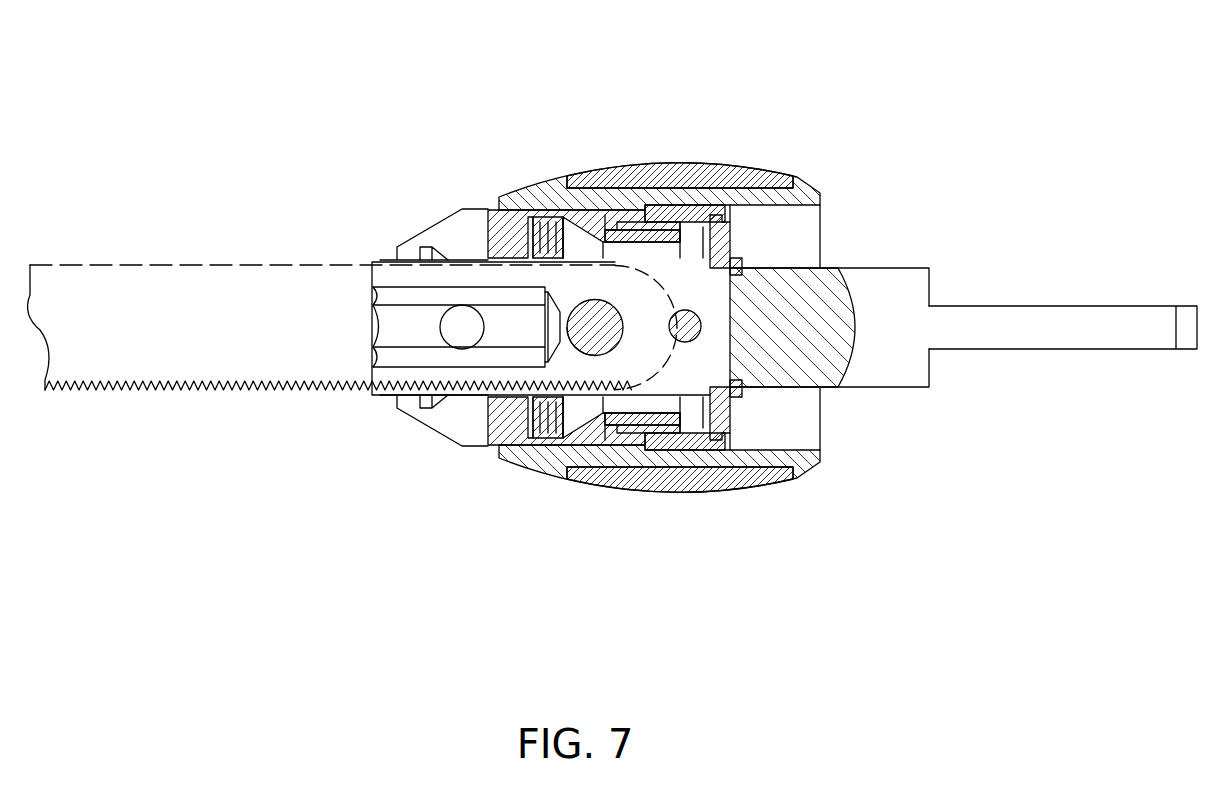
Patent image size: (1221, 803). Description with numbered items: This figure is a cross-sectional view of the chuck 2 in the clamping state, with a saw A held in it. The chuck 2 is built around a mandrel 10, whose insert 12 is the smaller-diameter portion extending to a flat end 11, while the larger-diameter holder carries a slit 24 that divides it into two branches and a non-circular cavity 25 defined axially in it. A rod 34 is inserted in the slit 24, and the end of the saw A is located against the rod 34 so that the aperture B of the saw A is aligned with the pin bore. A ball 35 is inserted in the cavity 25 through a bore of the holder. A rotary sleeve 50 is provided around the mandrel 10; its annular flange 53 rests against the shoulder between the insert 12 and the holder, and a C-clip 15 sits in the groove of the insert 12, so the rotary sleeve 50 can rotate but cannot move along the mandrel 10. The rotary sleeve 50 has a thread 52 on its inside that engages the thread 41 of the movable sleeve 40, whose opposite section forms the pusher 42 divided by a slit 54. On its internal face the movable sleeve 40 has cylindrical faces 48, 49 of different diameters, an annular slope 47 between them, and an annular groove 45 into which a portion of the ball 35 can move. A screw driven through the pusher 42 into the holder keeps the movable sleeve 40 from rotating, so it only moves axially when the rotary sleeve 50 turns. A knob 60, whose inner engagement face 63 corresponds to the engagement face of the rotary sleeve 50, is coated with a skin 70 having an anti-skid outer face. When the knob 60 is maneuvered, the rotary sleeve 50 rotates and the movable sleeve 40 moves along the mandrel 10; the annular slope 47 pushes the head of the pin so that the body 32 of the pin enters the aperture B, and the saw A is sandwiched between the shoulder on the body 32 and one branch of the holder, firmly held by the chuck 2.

The chuck 2 is at (494, 294).
The mandrel 10 is at (963, 335).
The flat end 11 is at (1003, 340).
The insert 12 is at (883, 372).
The C-clip 15 is at (745, 268).
The slit 24 is at (692, 228).
The cavity 25 is at (373, 355).
The body 32 is at (635, 415).
The rod 34 is at (716, 440).
The ball 35 is at (460, 320).
The movable sleeve 40 is at (584, 251).
The thread 41 is at (623, 232).
The pusher 42 is at (578, 218).
The annular groove 45 is at (440, 255).
The annular slope 47 is at (607, 340).
The cylindrical face 48 is at (552, 435).
The cylindrical face 49 is at (688, 343).
The rotary sleeve 50 is at (662, 212).
The thread 52 is at (686, 217).
The annular flange 53 is at (732, 237).
The slit 54 is at (480, 425).
The knob 60 is at (795, 475).
The engagement face 63 is at (757, 197).
The skin 70 is at (750, 472).
The saw A is at (73, 365).
The aperture B is at (583, 350).